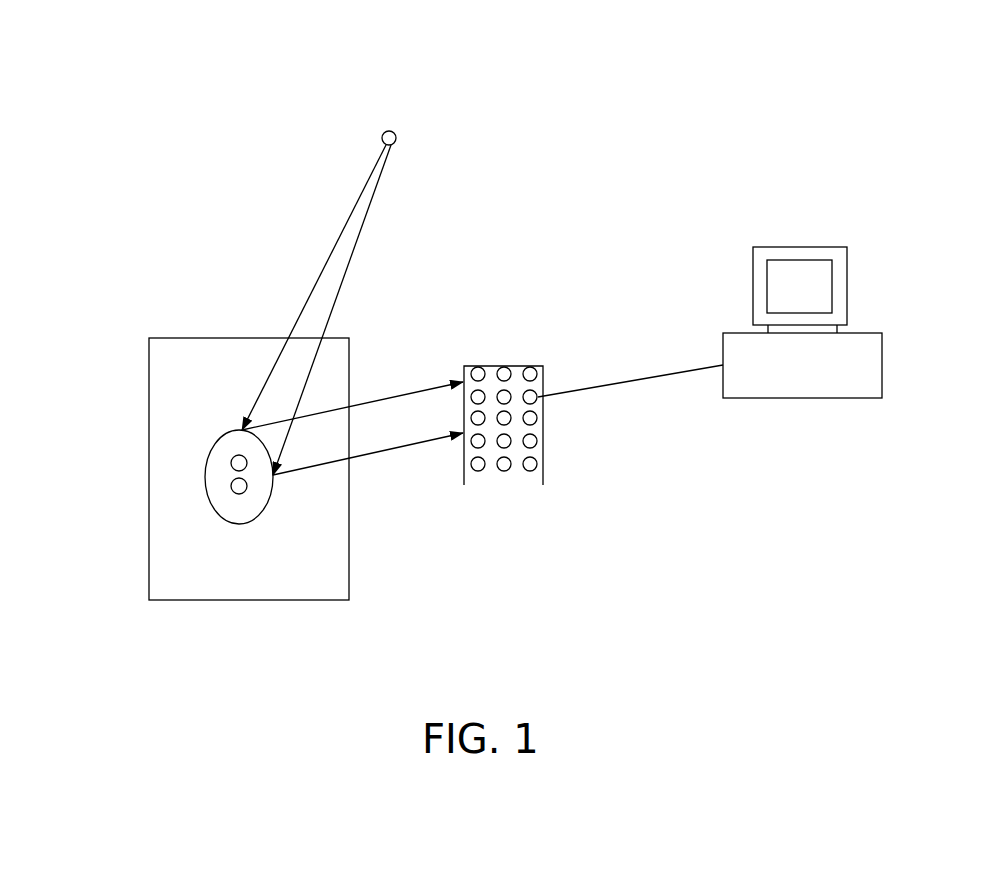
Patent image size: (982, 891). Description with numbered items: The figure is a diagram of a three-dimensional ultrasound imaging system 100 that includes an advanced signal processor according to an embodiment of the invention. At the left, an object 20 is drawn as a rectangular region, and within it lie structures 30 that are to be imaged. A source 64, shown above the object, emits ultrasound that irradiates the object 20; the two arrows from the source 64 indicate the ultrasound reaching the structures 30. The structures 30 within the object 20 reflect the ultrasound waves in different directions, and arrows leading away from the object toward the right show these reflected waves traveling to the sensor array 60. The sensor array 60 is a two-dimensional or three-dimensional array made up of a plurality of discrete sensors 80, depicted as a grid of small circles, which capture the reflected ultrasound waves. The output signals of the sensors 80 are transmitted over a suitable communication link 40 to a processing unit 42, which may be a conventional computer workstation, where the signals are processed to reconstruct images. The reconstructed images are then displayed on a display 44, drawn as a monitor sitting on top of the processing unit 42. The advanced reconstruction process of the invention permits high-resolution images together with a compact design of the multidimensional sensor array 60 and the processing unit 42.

The 3D ultrasound imaging system 100 is at (90, 38).
The object 20 is at (227, 570).
The structures 30 is at (231, 468).
The source 64 is at (396, 131).
The sensor array 60 is at (543, 450).
The discrete sensors 80 is at (532, 371).
The communication link 40 is at (602, 387).
The processing unit 42 is at (762, 372).
The display 44 is at (778, 245).